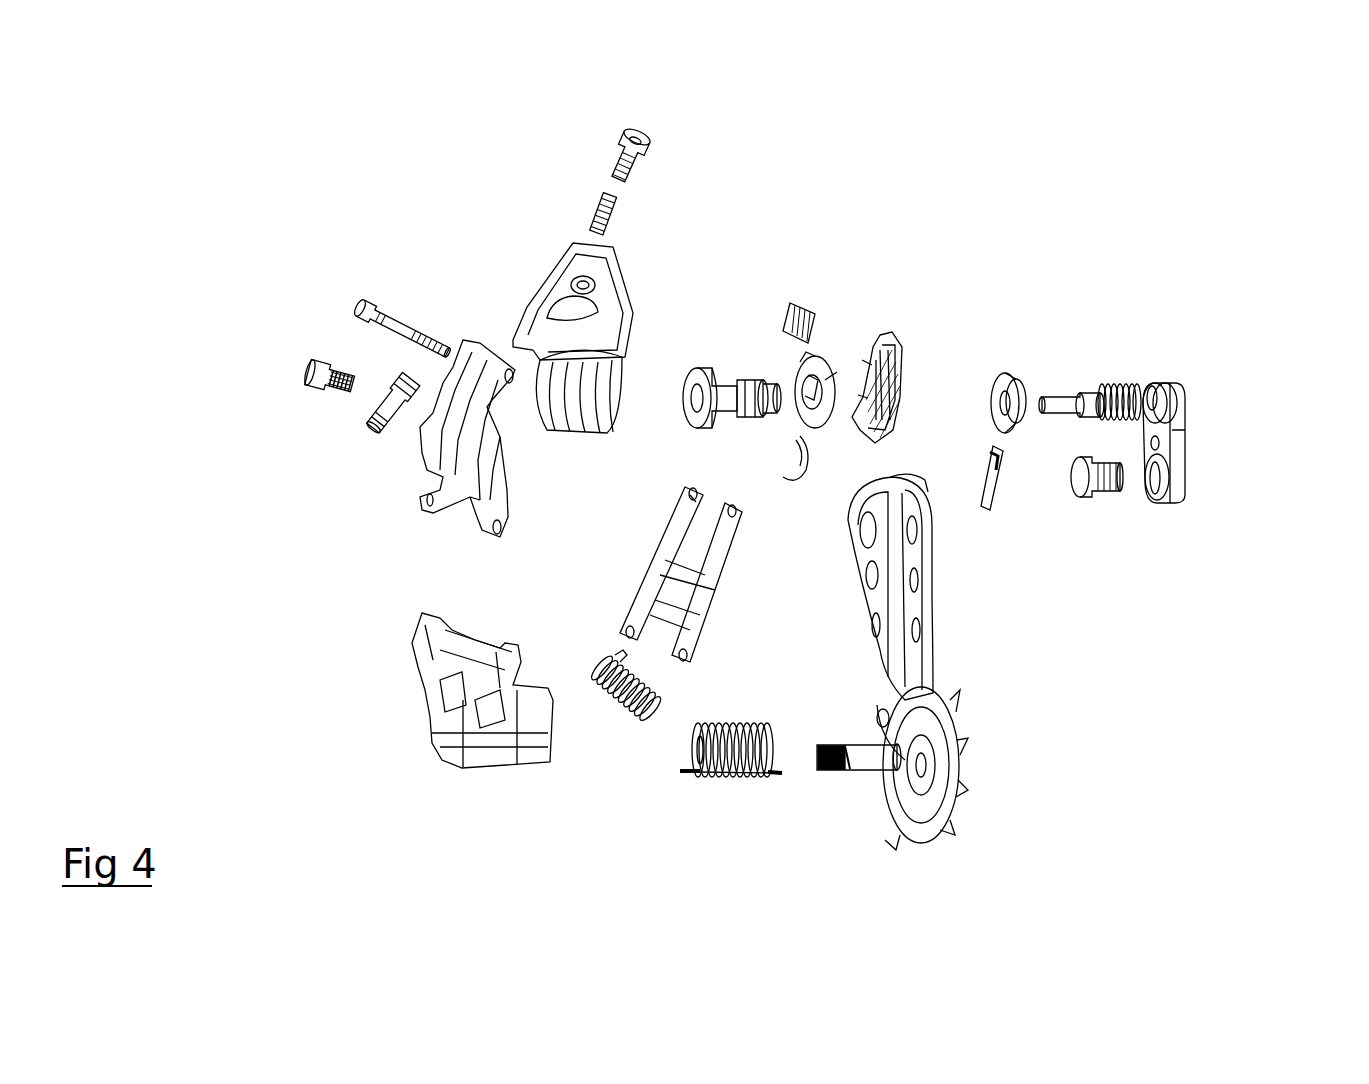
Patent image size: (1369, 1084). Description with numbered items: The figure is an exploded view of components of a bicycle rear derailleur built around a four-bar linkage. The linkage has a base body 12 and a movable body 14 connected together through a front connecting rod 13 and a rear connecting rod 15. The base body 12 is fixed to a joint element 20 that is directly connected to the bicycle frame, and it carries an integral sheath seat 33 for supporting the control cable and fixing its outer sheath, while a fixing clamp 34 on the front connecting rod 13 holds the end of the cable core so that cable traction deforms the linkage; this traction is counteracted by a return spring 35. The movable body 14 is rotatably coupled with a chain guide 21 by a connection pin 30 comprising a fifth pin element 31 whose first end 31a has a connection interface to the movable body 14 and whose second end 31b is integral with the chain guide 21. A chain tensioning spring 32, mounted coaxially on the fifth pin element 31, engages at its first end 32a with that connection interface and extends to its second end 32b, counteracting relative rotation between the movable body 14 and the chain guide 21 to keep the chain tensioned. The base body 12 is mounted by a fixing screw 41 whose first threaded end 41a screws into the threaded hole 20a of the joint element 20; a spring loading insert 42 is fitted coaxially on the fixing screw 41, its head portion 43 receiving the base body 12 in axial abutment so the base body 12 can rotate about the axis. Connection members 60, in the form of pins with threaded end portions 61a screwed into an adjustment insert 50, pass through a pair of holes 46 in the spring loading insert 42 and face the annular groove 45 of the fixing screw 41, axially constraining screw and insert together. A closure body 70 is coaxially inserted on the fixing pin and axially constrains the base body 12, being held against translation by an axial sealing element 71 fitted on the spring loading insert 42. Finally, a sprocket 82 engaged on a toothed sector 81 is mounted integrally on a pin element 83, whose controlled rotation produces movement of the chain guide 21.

The base body 12 is at (555, 287).
The front connecting rod 13 is at (475, 355).
The movable body 14 is at (443, 733).
The rear connecting rod 15 is at (655, 585).
The joint element 20 is at (1185, 440).
The threaded hole 20a is at (1170, 393).
The chain guide 21 is at (933, 613).
The connection pin 30 is at (960, 790).
The fifth pin element 31 is at (897, 730).
The first end 31a is at (833, 769).
The second end 31b is at (873, 763).
The chain tensioning spring 32 is at (720, 777).
The first end 32a is at (680, 772).
The second end 32b is at (773, 774).
The sheath seat 33 is at (587, 238).
The fixing clamp 34 is at (373, 413).
The return spring 35 is at (617, 710).
The fixing screw 41 is at (1080, 397).
The first threaded end 41a is at (1133, 393).
The spring loading insert 42 is at (727, 383).
The head portion 43 is at (703, 367).
The radially outer annular groove 45 is at (1100, 382).
The holes 46 is at (768, 383).
The adjustment insert 50 is at (1005, 373).
The connection members 60 is at (1000, 503).
The threaded end portion 61a is at (985, 450).
The closure body 70 is at (882, 335).
The axial sealing element 71 is at (807, 467).
The toothed sector 81 is at (826, 360).
The sprocket 82 is at (795, 300).
The pin element 83 is at (387, 313).